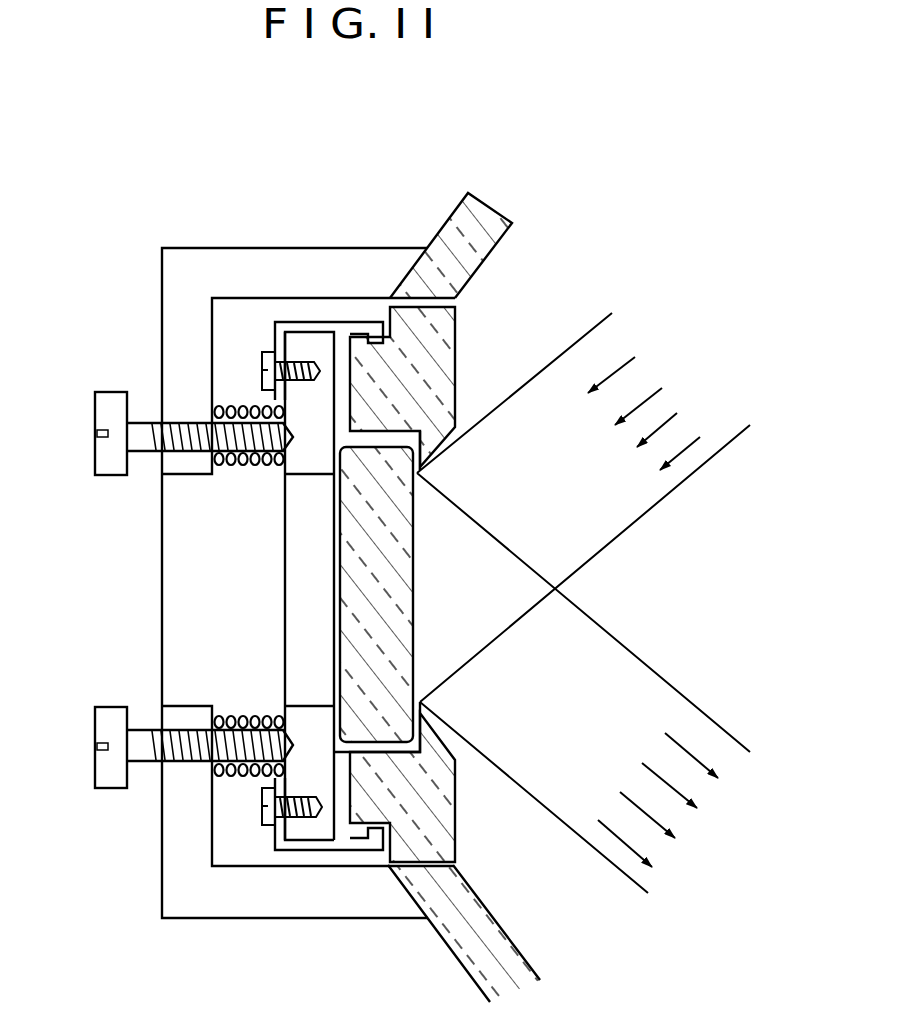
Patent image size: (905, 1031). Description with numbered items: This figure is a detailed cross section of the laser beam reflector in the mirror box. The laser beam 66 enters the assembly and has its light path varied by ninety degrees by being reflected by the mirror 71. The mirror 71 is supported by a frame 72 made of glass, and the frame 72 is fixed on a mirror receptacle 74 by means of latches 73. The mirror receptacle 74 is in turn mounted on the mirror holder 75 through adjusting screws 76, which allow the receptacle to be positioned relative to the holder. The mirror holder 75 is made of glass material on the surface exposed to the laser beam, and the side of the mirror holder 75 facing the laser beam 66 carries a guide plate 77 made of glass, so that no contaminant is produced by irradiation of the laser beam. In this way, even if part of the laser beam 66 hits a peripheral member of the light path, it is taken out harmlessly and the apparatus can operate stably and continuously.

The laser beam 66 is at (655, 668).
The mirror 71 is at (407, 593).
The frame 72 is at (438, 348).
The latches 73 is at (335, 322).
The mirror receptacle 74 is at (297, 338).
The mirror holder 75 is at (177, 293).
The adjusting screws 76 is at (110, 465).
The guide plate 77 is at (463, 210).